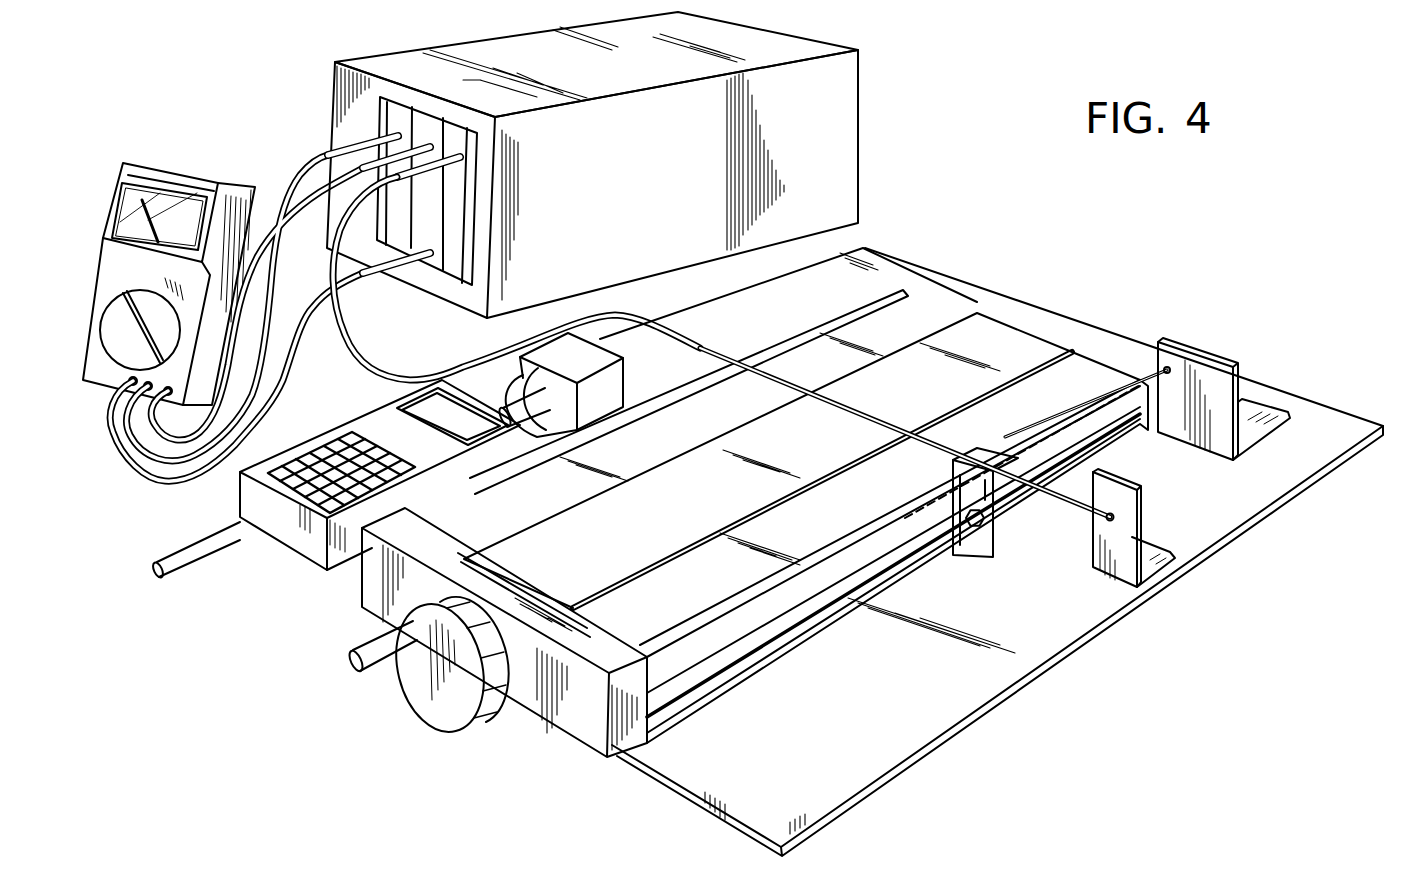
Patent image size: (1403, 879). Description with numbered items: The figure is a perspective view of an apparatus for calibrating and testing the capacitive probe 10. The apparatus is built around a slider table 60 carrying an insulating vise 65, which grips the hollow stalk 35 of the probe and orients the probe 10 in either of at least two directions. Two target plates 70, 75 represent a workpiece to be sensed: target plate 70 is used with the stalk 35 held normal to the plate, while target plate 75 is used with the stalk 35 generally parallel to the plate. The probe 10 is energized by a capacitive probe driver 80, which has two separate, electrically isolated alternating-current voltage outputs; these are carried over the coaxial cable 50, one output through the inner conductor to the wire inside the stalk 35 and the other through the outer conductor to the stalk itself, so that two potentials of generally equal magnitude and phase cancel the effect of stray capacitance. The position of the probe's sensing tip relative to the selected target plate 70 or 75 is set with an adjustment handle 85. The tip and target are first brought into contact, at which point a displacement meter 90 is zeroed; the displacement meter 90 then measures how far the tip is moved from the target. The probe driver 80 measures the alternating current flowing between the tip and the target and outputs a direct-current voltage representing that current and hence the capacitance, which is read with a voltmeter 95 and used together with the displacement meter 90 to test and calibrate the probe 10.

The probe 10 is at (1066, 510).
The stalk 35 is at (1097, 453).
The coaxial cable 50 is at (655, 326).
The slider table 60 is at (923, 313).
The insulating vise 65 is at (978, 448).
The target plate 70 is at (1203, 377).
The target plate 75 is at (1115, 547).
The capacitive probe driver 80 is at (702, 173).
The adjustment handle 85 is at (445, 705).
The displacement meter 90 is at (307, 547).
The voltmeter 95 is at (192, 178).